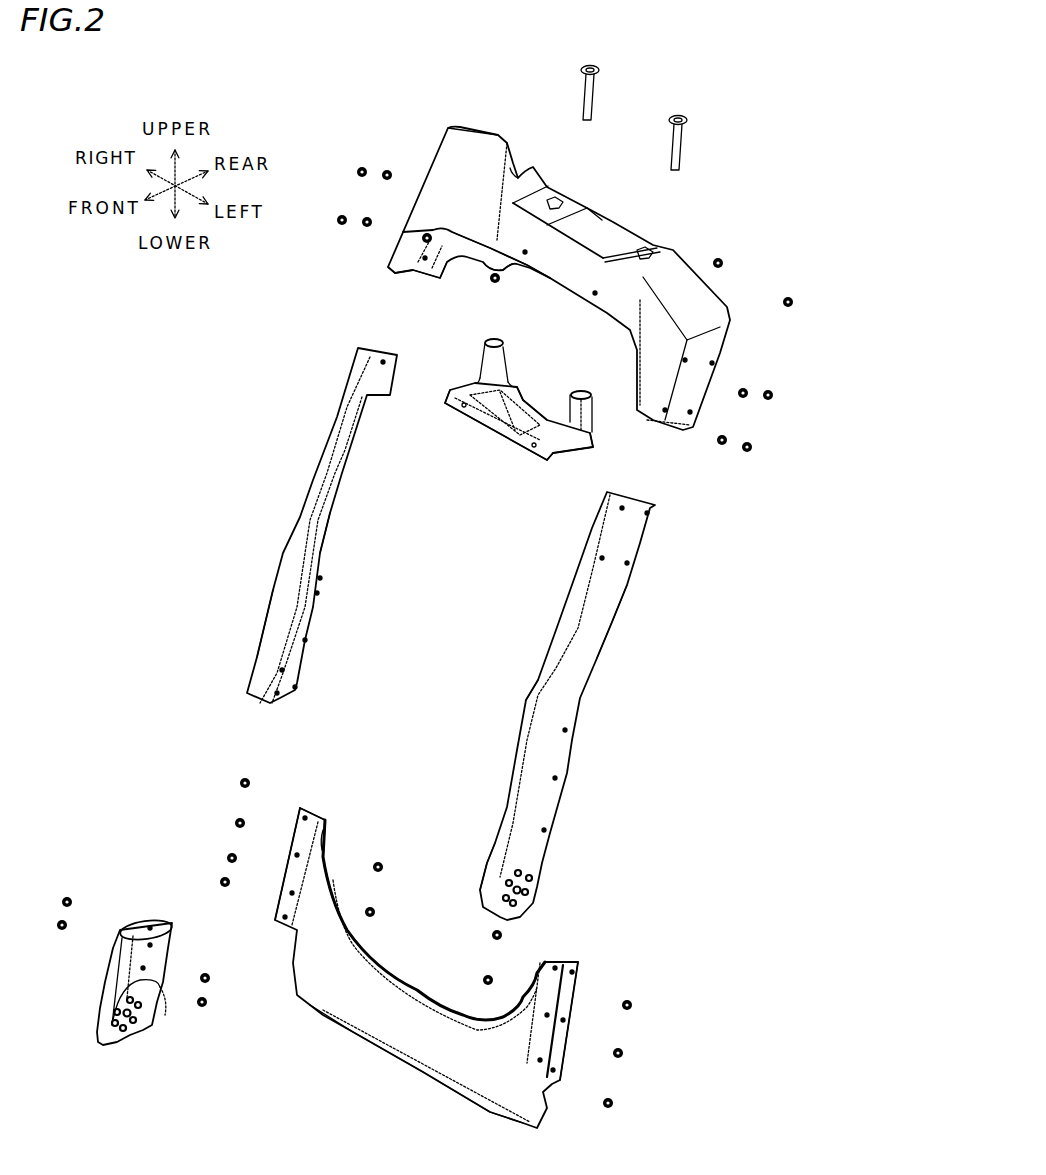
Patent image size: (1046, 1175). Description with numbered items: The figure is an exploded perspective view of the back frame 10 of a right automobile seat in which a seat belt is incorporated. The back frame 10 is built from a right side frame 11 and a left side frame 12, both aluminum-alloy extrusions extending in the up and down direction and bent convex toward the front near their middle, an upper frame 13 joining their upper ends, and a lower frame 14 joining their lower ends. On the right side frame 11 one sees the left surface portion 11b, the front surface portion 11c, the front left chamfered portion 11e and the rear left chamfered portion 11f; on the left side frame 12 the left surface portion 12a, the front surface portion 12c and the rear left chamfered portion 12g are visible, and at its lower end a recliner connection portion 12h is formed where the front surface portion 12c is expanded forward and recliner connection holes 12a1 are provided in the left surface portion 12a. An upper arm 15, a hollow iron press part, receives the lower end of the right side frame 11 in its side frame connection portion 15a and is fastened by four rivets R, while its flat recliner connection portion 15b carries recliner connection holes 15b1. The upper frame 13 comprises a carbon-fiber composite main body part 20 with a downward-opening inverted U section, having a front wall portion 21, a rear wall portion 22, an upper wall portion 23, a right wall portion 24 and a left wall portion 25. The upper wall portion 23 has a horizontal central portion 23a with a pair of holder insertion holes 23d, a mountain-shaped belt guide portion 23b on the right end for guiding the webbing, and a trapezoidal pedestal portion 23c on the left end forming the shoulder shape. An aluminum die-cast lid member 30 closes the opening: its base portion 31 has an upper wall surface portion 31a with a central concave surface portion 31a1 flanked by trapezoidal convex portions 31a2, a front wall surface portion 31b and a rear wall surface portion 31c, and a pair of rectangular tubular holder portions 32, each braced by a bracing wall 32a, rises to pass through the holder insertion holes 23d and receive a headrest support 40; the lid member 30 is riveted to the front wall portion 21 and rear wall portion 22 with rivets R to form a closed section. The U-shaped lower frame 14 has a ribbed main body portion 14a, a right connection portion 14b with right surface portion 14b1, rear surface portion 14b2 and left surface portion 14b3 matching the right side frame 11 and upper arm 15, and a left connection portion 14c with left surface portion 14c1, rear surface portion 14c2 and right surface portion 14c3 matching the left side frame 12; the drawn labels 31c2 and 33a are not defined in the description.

The back frame 10 is at (720, 94).
The right side frame 11 is at (310, 472).
The left surface portion 11b is at (295, 617).
The front surface portion 11c is at (283, 557).
The front left chamfered portion 11e is at (290, 583).
The rear left chamfered portion 11f is at (320, 577).
The left side frame 12 is at (580, 695).
The left surface portion 12a is at (578, 655).
The recliner connection holes 12a1 is at (532, 878).
The front surface portion 12c is at (525, 697).
The rear left chamfered portion 12g is at (605, 617).
The recliner connection portion 12h is at (547, 870).
The upper frame 13 is at (622, 222).
The lower frame 14 is at (392, 1055).
The main body portion 14a is at (350, 1035).
The right connection portion 14b is at (300, 820).
The right surface portion 14b1 is at (310, 806).
The rear surface portion 14b2 is at (330, 815).
The left surface portion 14b3 is at (325, 835).
The left connection portion 14c is at (565, 997).
The left surface portion 14c1 is at (575, 972).
The rear surface portion 14c2 is at (580, 965).
The right surface portion 14c3 is at (556, 960).
The upper arm 15 is at (113, 950).
The side frame connection portion 15a is at (160, 925).
The recliner connection portion 15b is at (118, 1044).
The recliner connection holes 15b1 is at (158, 1022).
The main body part 20 is at (665, 218).
The front wall portion 21 is at (567, 290).
The rear wall portion 22 is at (465, 265).
The upper wall portion 23 is at (582, 215).
The central portion 23a is at (610, 228).
The belt guide portion 23b is at (480, 127).
The pedestal portion 23c is at (690, 297).
The holder insertion holes 23d is at (555, 198).
The right wall portion 24 is at (418, 262).
The left wall portion 25 is at (705, 350).
The lid member 30 is at (480, 425).
The base portion 31 is at (465, 410).
The upper wall surface portion 31a is at (523, 400).
The concave surface portion 31a1 is at (510, 430).
The convex portions 31a2 is at (455, 385).
The front wall surface portion 31b is at (540, 462).
The rear wall surface portion 31c is at (595, 445).
The plate side wall lower portion 31c2 is at (560, 450).
The holder portions 32 is at (485, 345).
The bracing wall 32a is at (558, 420).
The pipe holder portion 33a is at (472, 380).
The headrest support 40 is at (598, 97).
The rivets R is at (724, 262).